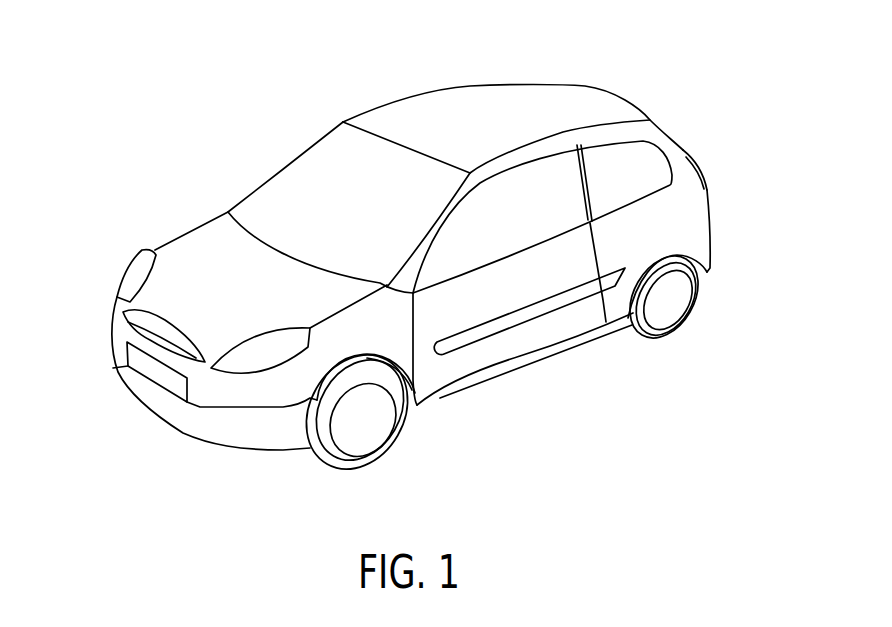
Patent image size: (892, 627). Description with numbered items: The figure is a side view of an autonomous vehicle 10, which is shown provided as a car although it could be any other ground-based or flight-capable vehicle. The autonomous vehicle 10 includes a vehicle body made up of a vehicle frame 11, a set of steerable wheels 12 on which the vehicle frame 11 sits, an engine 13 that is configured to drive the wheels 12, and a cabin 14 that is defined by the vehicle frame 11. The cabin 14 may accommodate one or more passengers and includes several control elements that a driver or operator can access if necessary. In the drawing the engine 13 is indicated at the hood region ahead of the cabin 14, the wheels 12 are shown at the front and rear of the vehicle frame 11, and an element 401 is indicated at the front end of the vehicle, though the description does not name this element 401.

The autonomous vehicle 10 is at (162, 118).
The vehicle frame 11 is at (217, 238).
The steerable wheels 12 is at (657, 340).
The engine 13 is at (237, 322).
The cabin 14 is at (310, 170).
The front sensor 401 is at (145, 371).